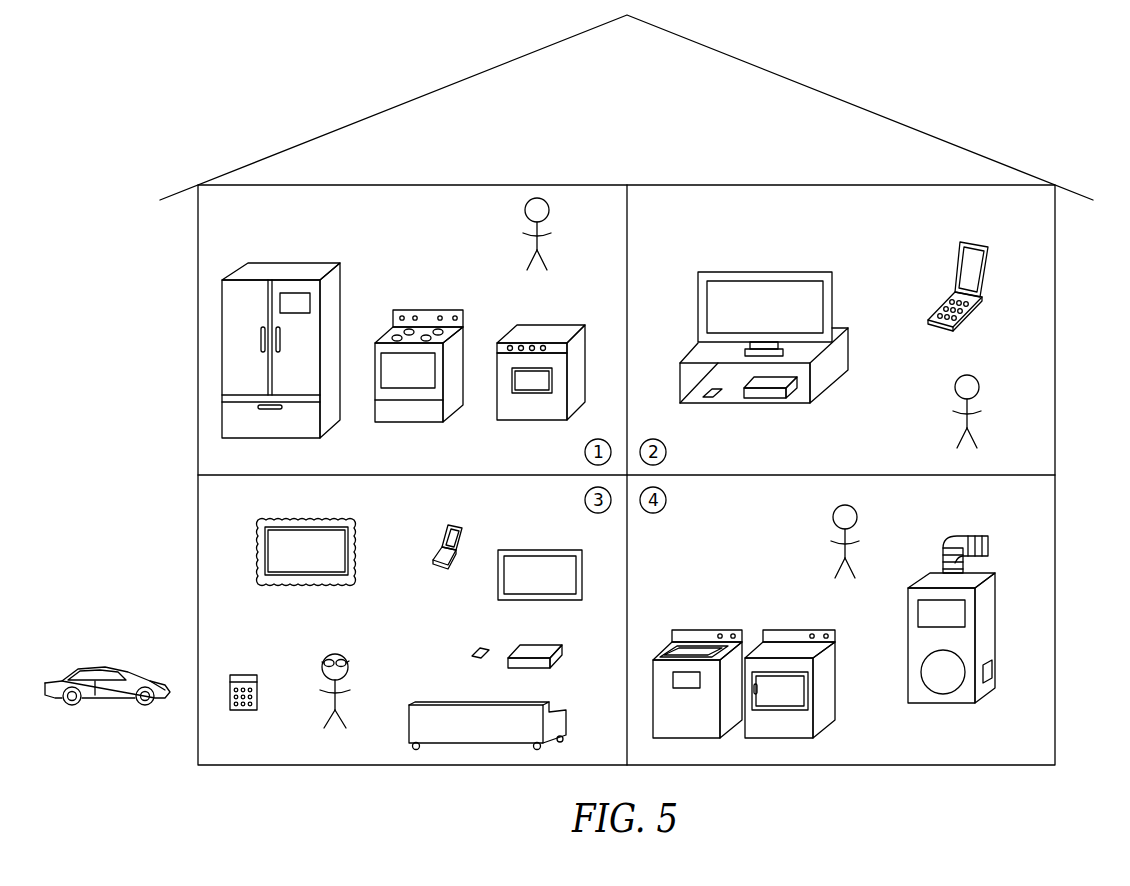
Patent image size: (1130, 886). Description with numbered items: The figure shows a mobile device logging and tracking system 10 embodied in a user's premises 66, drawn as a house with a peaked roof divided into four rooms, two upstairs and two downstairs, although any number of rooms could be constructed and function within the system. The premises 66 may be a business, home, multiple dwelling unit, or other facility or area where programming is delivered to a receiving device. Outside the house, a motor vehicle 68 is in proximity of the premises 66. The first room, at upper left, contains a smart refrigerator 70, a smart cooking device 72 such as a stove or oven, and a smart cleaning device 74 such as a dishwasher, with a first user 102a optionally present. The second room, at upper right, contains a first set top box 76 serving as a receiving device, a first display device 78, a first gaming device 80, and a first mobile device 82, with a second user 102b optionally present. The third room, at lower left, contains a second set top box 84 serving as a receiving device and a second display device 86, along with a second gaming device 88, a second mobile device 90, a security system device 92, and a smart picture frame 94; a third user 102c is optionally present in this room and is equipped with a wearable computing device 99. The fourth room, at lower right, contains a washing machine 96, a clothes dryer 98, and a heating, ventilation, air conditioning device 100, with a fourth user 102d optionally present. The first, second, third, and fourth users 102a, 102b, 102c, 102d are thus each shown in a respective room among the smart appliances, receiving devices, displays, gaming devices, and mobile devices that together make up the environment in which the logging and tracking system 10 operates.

The mobile device logging and tracking system 10 is at (262, 111).
The user's premises 66 is at (1055, 296).
The motor vehicle 68 is at (92, 668).
The smart refrigerator 70 is at (292, 263).
The smart cooking device 72 is at (428, 310).
The smart cleaning device 74 is at (552, 325).
The first set top box 76 is at (768, 400).
The first display device 78 is at (765, 272).
The first gaming device 80 is at (710, 402).
The first mobile device 82 is at (956, 268).
The second set top box 84 is at (545, 645).
The second display device 86 is at (542, 550).
The second gaming device 88 is at (486, 646).
The second mobile device 90 is at (445, 540).
The security system device 92 is at (244, 674).
The smart picture frame 94 is at (314, 520).
The washing machine 96 is at (708, 630).
The clothes dryer 98 is at (798, 630).
The wearable computing device 99 is at (345, 658).
The heating, ventilation, air conditioning (HVAC) device 100 is at (946, 704).
The first user 102a is at (548, 233).
The second user 102b is at (977, 410).
The third user 102c is at (369, 678).
The fourth user 102d is at (853, 540).